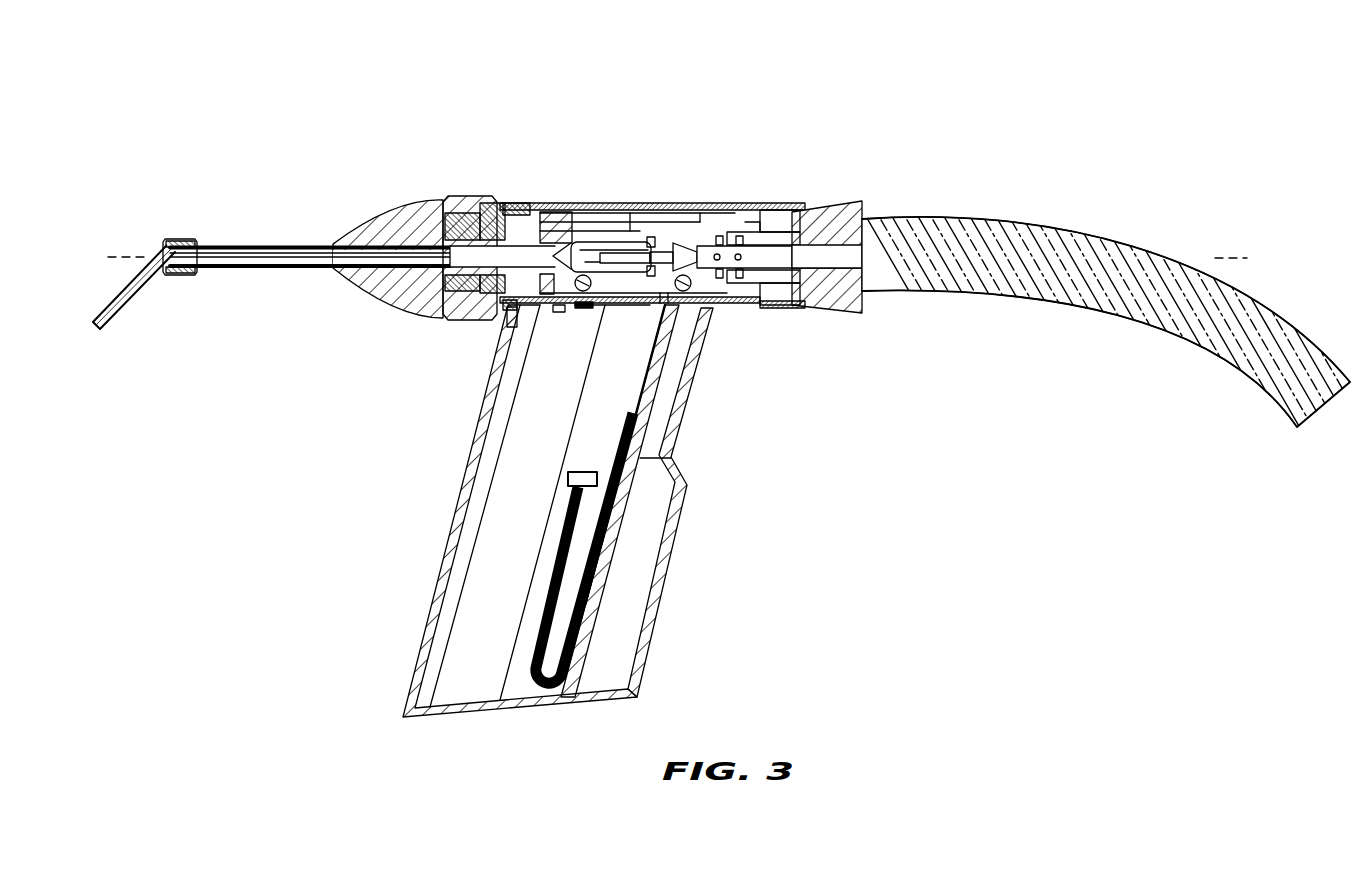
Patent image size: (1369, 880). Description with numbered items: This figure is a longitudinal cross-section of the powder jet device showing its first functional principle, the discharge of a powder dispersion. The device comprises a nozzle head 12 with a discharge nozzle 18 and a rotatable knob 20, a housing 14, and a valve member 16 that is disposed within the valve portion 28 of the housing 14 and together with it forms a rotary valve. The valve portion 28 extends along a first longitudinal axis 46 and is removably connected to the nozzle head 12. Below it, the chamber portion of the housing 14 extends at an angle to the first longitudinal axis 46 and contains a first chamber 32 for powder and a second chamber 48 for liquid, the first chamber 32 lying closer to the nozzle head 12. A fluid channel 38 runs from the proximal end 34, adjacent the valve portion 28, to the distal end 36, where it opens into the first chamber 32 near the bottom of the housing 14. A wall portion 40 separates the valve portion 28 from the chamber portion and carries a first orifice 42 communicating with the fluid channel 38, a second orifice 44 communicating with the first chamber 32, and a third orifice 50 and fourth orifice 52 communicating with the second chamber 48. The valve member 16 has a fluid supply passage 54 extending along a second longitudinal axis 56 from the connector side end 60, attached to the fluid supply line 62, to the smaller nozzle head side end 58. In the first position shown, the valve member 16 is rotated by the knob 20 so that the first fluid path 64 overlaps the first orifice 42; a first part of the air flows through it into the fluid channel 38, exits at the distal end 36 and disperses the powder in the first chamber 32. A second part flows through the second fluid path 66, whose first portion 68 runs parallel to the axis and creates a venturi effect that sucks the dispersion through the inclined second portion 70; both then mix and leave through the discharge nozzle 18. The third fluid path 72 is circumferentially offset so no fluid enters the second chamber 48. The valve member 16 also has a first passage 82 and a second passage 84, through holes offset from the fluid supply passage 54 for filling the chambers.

The nozzle head 12 is at (188, 232).
The housing 14 is at (610, 196).
The valve member 16 is at (697, 248).
The discharge nozzle 18 is at (132, 286).
The rotatable knob 20 is at (288, 244).
The valve portion 28 is at (630, 204).
The first chamber 32 is at (475, 612).
The proximal end 34 is at (650, 305).
The distal end 36 is at (417, 663).
The fluid channel 38 is at (640, 397).
The wall portion 40 is at (530, 303).
The first orifice 42 is at (610, 303).
The second orifice 44 is at (553, 300).
The first longitudinal axis 46 is at (130, 251).
The second chamber 48 is at (647, 530).
The third orifice 50 is at (728, 305).
The fourth orifice 52 is at (687, 303).
The fluid supply passage 54 is at (571, 242).
The second longitudinal axis 56 is at (1247, 258).
The nozzle head side end 58 is at (472, 200).
The connector side end 60 is at (768, 212).
The fluid supply line 62 is at (906, 240).
The first fluid path 64 is at (670, 243).
The second fluid path 66 is at (522, 203).
The first portion 68 is at (437, 240).
The second portion 70 is at (445, 282).
The third fluid path 72 is at (735, 308).
The first passage 82 is at (527, 263).
The second passage 84 is at (672, 363).